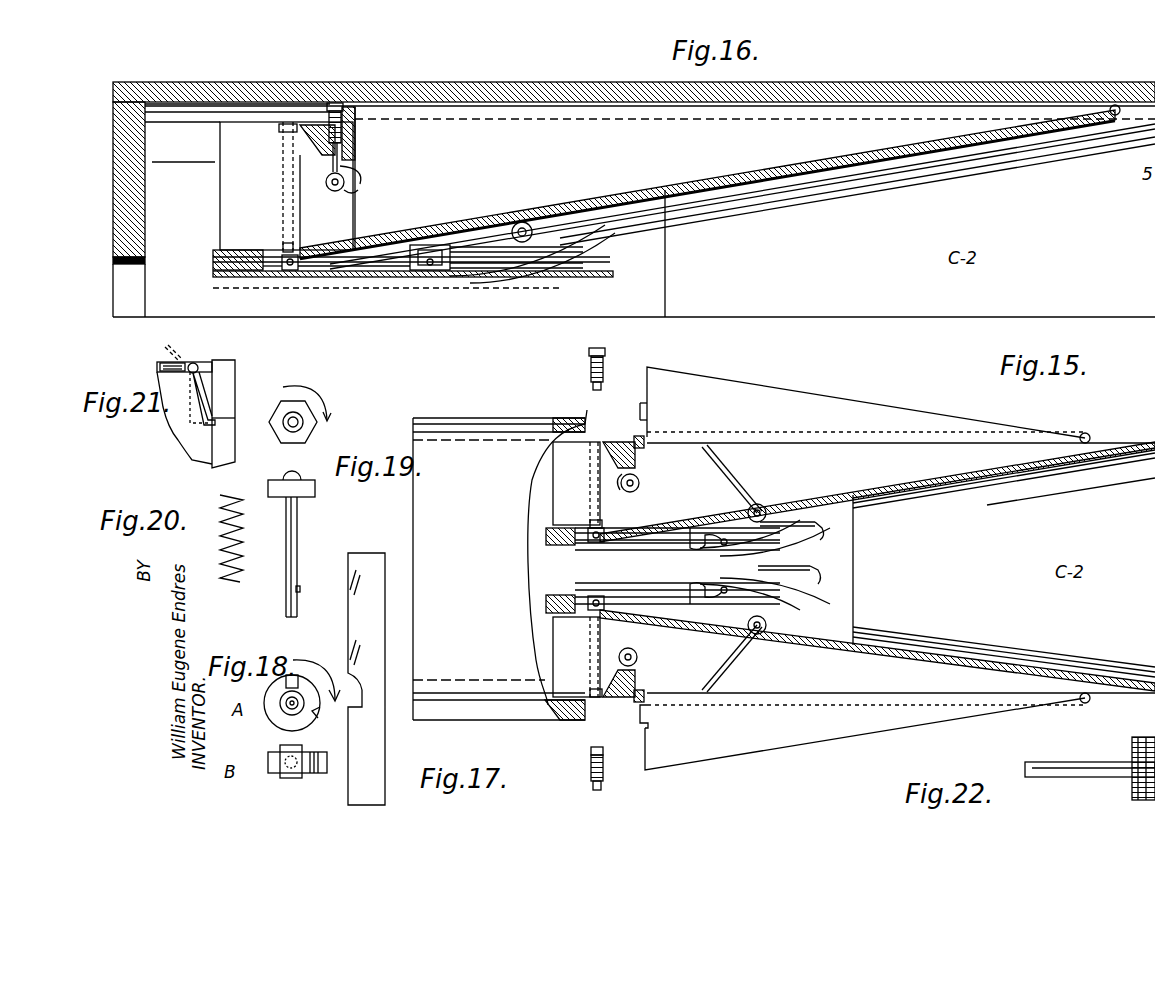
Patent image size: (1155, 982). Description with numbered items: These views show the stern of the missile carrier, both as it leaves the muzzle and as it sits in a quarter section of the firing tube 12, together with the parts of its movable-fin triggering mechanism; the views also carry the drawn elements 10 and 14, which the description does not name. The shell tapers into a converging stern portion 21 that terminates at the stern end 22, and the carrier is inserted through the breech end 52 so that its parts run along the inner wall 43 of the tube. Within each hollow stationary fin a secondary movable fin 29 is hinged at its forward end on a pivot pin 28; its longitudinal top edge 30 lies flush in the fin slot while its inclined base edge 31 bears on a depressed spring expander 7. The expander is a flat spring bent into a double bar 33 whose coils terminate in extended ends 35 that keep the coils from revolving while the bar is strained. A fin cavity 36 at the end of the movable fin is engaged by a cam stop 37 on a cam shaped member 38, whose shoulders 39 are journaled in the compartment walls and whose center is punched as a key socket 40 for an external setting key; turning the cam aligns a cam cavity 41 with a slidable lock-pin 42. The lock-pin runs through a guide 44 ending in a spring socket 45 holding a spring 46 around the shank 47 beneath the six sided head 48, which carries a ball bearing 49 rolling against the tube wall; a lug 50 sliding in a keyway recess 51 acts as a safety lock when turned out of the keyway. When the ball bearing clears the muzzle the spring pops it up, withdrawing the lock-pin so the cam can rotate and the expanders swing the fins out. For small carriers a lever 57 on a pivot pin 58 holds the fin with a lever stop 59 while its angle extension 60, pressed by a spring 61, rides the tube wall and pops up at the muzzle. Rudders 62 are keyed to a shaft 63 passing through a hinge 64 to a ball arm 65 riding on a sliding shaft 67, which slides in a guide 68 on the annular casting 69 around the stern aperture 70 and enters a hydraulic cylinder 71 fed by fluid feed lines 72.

In FIG. 16, the spring expander 7 is at (516, 222).
In FIG. 15, the spring expander 7 is at (758, 503).
In FIG. 22, the spring expander 7 is at (1124, 768).
In FIG. 18, the pin 10 is at (289, 778).
In FIG. 17, the firing tube 12 is at (500, 565).
In FIG. 17, the frame plate 14 is at (585, 420).
In FIG. 16, the stern portion 21 is at (820, 165).
In FIG. 16, the stern end 22 is at (335, 216).
In FIG. 15, the stern end 22 is at (877, 566).
In FIG. 21, the stern end 22 is at (176, 420).
In FIG. 16, the pivot pin 28 is at (1117, 105).
In FIG. 15, the pivot pin 28 is at (1089, 434).
In FIG. 16, the secondary movable fin 29 is at (637, 144).
In FIG. 15, the secondary movable fin 29 is at (800, 408).
In FIG. 21, the secondary movable fin 29 is at (236, 386).
In FIG. 18, the secondary movable fin 29 is at (376, 617).
In FIG. 16, the longitudinal top edge 30 is at (572, 100).
In FIG. 15, the longitudinal top edge 30 is at (838, 394).
In FIG. 16, the base edge 31 is at (656, 200).
In FIG. 15, the base edge 31 is at (910, 445).
In FIG. 16, the double bar 33 is at (432, 226).
In FIG. 15, the double bar 33 is at (722, 474).
In FIG. 22, the double bar 33 is at (1072, 774).
In FIG. 15, the extended ends 35 is at (790, 496).
In FIG. 16, the fin cavity 36 is at (360, 186).
In FIG. 15, the fin cavity 36 is at (646, 412).
In FIG. 21, the fin cavity 36 is at (236, 418).
In FIG. 18, the fin cavity 36 is at (368, 679).
In FIG. 16, the cam stop 37 is at (361, 198).
In FIG. 15, the cam stop 37 is at (640, 480).
In FIG. 18, the cam stop 37 is at (330, 790).
In FIG. 15, the cam shaped member 38 is at (640, 487).
In FIG. 18, the cam shaped member 38 is at (284, 714).
In FIG. 18, the shoulders 39 is at (302, 750).
In FIG. 16, the key socket 40 is at (335, 191).
In FIG. 16, the cam cavity 41 is at (311, 200).
In FIG. 15, the cam cavity 41 is at (624, 506).
In FIG. 18, the cam cavity 41 is at (313, 674).
In FIG. 15, the lock-pin 42 is at (596, 390).
In FIG. 19, the lock-pin 42 is at (286, 606).
In FIG. 16, the inner wall 43 is at (440, 95).
In FIG. 17, the inner wall 43 is at (553, 438).
In FIG. 16, the guide 44 is at (320, 156).
In FIG. 15, the guide 44 is at (640, 678).
In FIG. 16, the spring socket 45 is at (356, 128).
In FIG. 15, the spring socket 45 is at (640, 440).
In FIG. 16, the spring 46 is at (346, 146).
In FIG. 15, the spring 46 is at (605, 372).
In FIG. 20, the spring 46 is at (246, 558).
In FIG. 19, the shank 47 is at (298, 558).
In FIG. 16, the six sided head 48 is at (344, 106).
In FIG. 15, the six sided head 48 is at (605, 354).
In FIG. 19, the six sided head 48 is at (315, 488).
In FIG. 16, the ball bearing 49 is at (336, 104).
In FIG. 15, the ball bearing 49 is at (596, 334).
In FIG. 19, the ball bearing 49 is at (286, 428).
In FIG. 19, the lug 50 is at (300, 590).
In FIG. 16, the keyway recess 51 is at (352, 178).
In FIG. 16, the breech end 52 is at (113, 222).
In FIG. 21, the lever 57 is at (196, 392).
In FIG. 21, the pivot pin 58 is at (198, 366).
In FIG. 21, the lever stop 59 is at (200, 426).
In FIG. 21, the angle extension 60 is at (186, 360).
In FIG. 21, the spring 61 is at (160, 362).
In FIG. 16, the rudders 62 is at (286, 186).
In FIG. 15, the rudders 62 is at (581, 569).
In FIG. 16, the shaft 63 is at (281, 139).
In FIG. 17, the shaft 63 is at (598, 702).
In FIG. 16, the hinge 64 is at (283, 249).
In FIG. 15, the hinge 64 is at (606, 698).
In FIG. 16, the ball arm 65 is at (288, 270).
In FIG. 15, the ball arm 65 is at (600, 594).
In FIG. 16, the sliding shaft 67 is at (262, 268).
In FIG. 16, the guide 68 is at (214, 265).
In FIG. 16, the annular casting 69 is at (214, 257).
In FIG. 16, the aperture 70 is at (214, 292).
In FIG. 16, the hydraulic cylinder 71 is at (432, 270).
In FIG. 15, the hydraulic cylinder 71 is at (700, 592).
In FIG. 16, the fluid feed lines 72 is at (586, 264).
In FIG. 15, the fluid feed lines 72 is at (814, 572).